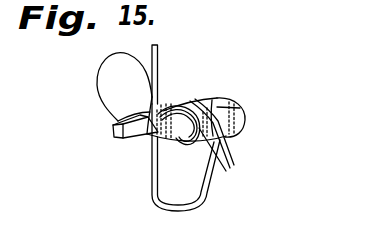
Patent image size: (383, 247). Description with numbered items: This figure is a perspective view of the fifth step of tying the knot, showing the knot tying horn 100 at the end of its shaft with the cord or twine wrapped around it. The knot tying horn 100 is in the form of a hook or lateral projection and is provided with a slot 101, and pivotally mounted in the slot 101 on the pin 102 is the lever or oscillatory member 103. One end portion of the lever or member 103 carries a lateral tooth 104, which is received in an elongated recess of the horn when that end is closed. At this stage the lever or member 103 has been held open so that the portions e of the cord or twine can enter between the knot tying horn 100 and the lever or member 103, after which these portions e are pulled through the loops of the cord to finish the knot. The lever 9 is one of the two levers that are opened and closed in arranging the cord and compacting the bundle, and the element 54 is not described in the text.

The rod 54 is at (158, 46).
The lever 9 is at (173, 105).
The lever or oscillatory member 103 is at (197, 103).
The portions of the cord or twine e is at (218, 104).
The lateral tooth 104 is at (230, 108).
The slot 101 is at (113, 126).
The pin 102 is at (147, 112).
The knot tying horn 100 is at (153, 152).